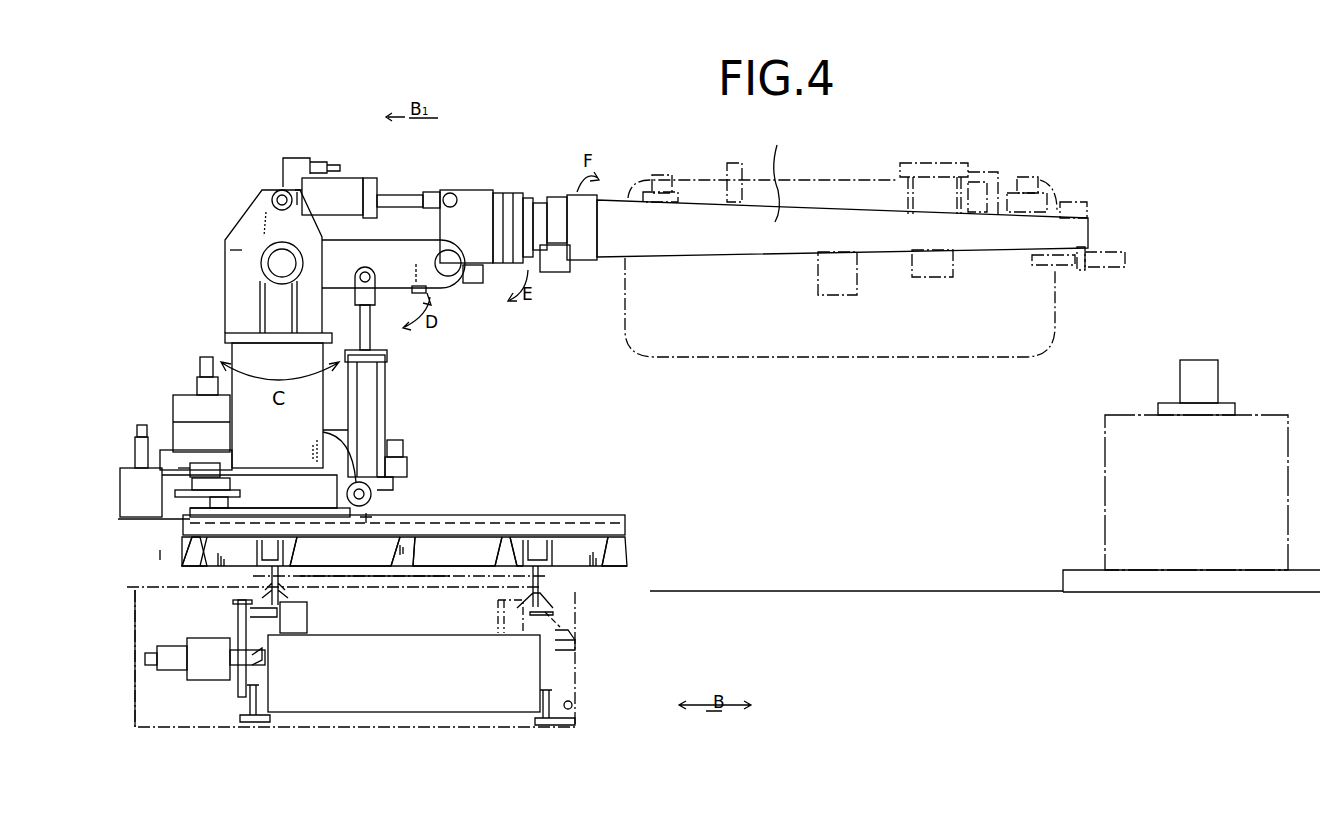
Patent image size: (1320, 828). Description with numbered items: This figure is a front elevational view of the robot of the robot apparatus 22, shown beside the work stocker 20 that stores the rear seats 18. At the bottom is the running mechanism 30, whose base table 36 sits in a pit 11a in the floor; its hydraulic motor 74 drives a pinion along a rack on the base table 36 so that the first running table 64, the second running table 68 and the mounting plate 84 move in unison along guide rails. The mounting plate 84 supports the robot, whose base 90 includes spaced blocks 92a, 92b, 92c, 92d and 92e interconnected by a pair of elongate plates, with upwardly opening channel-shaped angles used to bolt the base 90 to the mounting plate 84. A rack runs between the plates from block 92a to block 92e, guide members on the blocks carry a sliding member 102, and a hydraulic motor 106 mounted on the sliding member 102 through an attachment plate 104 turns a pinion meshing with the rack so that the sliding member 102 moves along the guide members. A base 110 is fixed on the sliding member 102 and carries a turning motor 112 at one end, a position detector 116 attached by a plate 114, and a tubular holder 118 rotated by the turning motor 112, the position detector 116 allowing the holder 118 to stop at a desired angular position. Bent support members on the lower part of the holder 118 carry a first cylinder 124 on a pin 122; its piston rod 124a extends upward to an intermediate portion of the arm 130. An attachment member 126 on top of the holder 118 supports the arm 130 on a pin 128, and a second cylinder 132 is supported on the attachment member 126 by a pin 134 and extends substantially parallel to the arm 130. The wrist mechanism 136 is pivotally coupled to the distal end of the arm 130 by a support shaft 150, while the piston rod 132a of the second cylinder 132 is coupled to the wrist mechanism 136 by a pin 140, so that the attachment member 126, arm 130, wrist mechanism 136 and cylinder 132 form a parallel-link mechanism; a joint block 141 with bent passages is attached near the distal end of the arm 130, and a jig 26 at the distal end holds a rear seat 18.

The robot apparatus 22 is at (221, 162).
The second cylinder 132 is at (343, 183).
The piston rod 132a is at (410, 195).
The pin 140 is at (452, 194).
The wrist mechanism 136 is at (489, 199).
The jig 26 is at (776, 173).
The rear seat 18 is at (843, 195).
The pin 134 is at (272, 198).
The pin 128 is at (273, 258).
The attachment member 126 is at (217, 289).
The joint block 141 is at (413, 294).
The support shaft 150 is at (450, 266).
The arm 130 is at (432, 273).
The piston rod 124a is at (366, 325).
The tubular holder 118 is at (240, 352).
The turning motor 112 is at (195, 406).
The first cylinder 124 is at (368, 402).
The position detector 116 is at (218, 468).
The pin 122 is at (372, 491).
The base 110 is at (327, 498).
The sliding member 102 is at (375, 514).
The plate 114 is at (240, 494).
The block 92e is at (622, 553).
The block 92b is at (300, 551).
The block 92c is at (400, 551).
The block 92d is at (505, 557).
The block 92a is at (193, 567).
The base 90 is at (583, 567).
The attachment plate 104 is at (133, 520).
The hydraulic motor 106 is at (120, 522).
The first running table 64 is at (262, 612).
The mounting plate 84 is at (353, 580).
The hydraulic motor 74 is at (204, 660).
The second running table 68 is at (568, 655).
The running mechanism 30 is at (555, 653).
The base table 36 is at (527, 667).
The pit 11a is at (577, 703).
The work stocker 20 is at (1112, 455).